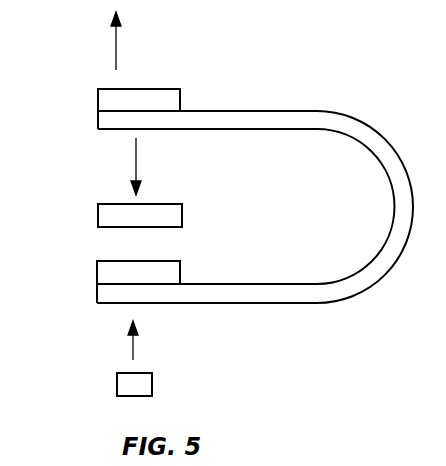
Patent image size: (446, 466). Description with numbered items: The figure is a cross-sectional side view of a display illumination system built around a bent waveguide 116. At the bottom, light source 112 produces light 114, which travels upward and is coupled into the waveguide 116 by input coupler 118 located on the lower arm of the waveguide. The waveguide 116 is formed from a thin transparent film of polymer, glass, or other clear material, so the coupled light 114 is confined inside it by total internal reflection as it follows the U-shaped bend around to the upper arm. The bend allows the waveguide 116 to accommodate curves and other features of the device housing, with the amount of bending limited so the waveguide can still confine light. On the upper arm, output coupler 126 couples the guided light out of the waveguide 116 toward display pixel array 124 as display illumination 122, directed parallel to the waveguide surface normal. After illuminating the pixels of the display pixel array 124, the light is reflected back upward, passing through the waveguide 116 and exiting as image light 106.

The image light 106 is at (116, 45).
The light source 112 is at (152, 385).
The light 114 is at (134, 348).
The waveguide 116 is at (358, 288).
The input coupler 118 is at (100, 273).
The display illumination 122 is at (137, 173).
The display pixel array 124 is at (100, 213).
The output coupler 126 is at (100, 100).